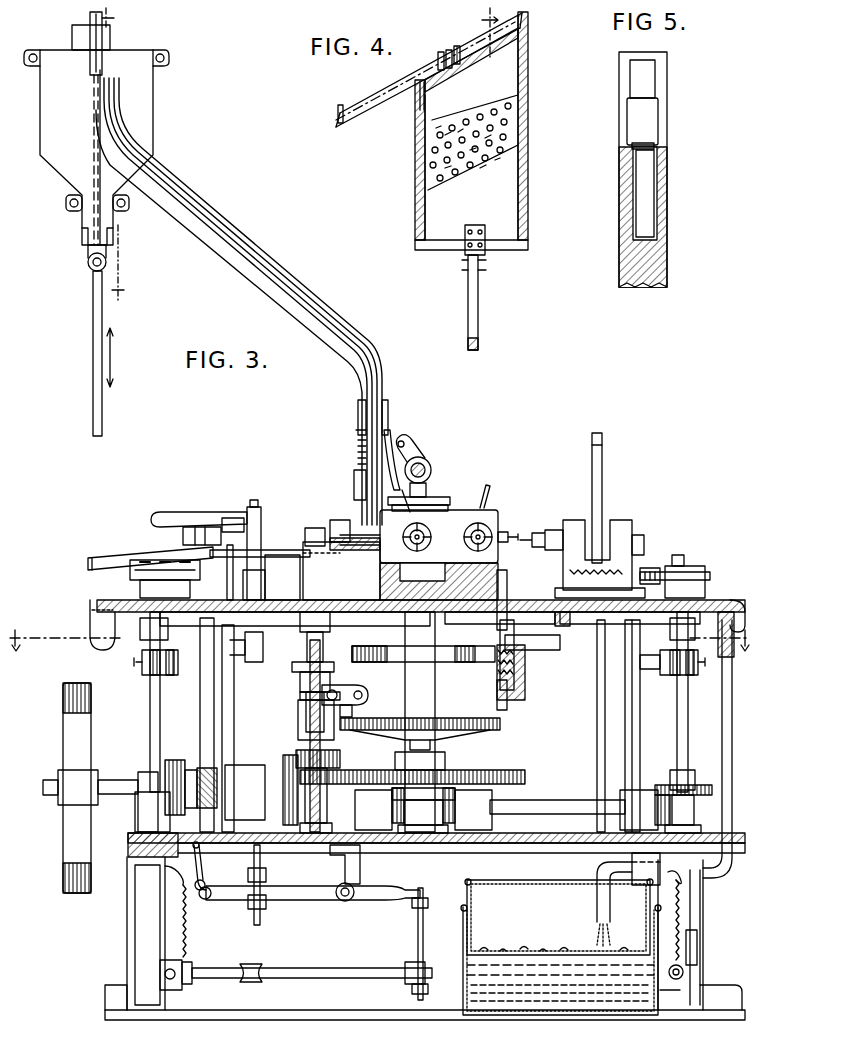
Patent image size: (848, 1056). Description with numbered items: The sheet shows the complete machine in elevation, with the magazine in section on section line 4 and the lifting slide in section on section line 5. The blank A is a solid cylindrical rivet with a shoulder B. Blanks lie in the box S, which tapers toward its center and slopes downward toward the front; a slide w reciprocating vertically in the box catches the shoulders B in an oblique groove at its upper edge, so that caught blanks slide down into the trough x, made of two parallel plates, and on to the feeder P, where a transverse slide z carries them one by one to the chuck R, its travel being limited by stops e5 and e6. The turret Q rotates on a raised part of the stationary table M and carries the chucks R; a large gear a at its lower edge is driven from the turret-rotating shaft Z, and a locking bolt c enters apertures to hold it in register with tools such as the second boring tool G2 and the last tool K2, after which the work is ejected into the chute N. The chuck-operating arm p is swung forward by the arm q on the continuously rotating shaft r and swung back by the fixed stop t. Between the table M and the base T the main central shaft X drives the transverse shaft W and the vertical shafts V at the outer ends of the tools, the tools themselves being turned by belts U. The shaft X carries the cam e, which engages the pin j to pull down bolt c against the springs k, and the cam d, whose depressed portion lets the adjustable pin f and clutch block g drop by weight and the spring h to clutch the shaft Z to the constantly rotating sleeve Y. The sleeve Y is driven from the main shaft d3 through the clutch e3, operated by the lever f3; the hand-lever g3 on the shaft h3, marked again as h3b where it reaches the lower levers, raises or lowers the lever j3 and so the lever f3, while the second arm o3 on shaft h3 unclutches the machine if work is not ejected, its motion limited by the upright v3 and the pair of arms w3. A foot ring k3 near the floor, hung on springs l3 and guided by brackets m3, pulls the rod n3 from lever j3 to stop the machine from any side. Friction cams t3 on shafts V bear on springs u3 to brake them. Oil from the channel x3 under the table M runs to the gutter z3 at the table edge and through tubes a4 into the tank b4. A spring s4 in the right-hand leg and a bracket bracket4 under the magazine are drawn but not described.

In FIG. 3, the magazine box S is at (96, 128).
In FIG. 4, the magazine box S is at (530, 94).
In FIG. 3, the slide w is at (90, 24).
In FIG. 4, the slide w is at (473, 138).
In FIG. 5, the slide w is at (662, 275).
In FIG. 3, the trough x is at (140, 158).
In FIG. 4, the trough x is at (338, 125).
In FIG. 3, the section line 4 is at (114, 161).
In FIG. 4, the section line 5 is at (482, 34).
In FIG. 3, the stop t is at (358, 492).
In FIG. 3, the transverse slide z is at (352, 536).
In FIG. 3, the second arm o3 is at (310, 528).
In FIG. 3, the arm q is at (412, 455).
In FIG. 3, the shaft r is at (431, 478).
In FIG. 3, the chuck-operating arm p is at (478, 505).
In FIG. 3, the turret Q is at (449, 536).
In FIG. 3, the chuck R is at (439, 569).
In FIG. 3, the feeder P is at (341, 560).
In FIG. 3, the ejecting chute N is at (110, 558).
In FIG. 3, the last tool mechanism K2 is at (183, 540).
In FIG. 3, the hand-lever g3 is at (190, 512).
In FIG. 3, the stop e6 is at (236, 518).
In FIG. 3, the shaft h3 is at (256, 505).
In FIG. 3, the stop e5 is at (260, 560).
In FIG. 3, the belt U is at (602, 462).
In FIG. 3, the second boring tool G2 is at (582, 547).
In FIG. 3, the table M is at (684, 576).
In FIG. 3, the gutter z3 is at (742, 598).
In FIG. 3, the large gear a is at (388, 625).
In FIG. 3, the locking bolt c is at (472, 612).
In FIG. 3, the main central shaft X is at (445, 760).
In FIG. 3, the cam d is at (465, 718).
In FIG. 3, the cam e is at (468, 646).
In FIG. 3, the transverse shaft W is at (538, 830).
In FIG. 3, the base T is at (550, 833).
In FIG. 3, the pin j is at (503, 645).
In FIG. 3, the spring k is at (525, 660).
In FIG. 3, the oil channel x3 is at (585, 618).
In FIG. 3, the turret-rotating shaft Z is at (307, 650).
In FIG. 3, the pair of arms w3 is at (282, 655).
In FIG. 3, the clutch block g is at (300, 690).
In FIG. 3, the spring h is at (298, 720).
In FIG. 3, the adjustable pin f is at (368, 692).
In FIG. 3, the sleeve Y is at (296, 755).
In FIG. 3, the upright v3 is at (420, 725).
In FIG. 3, the vertical shaft V is at (150, 706).
In FIG. 3, the spring u3 is at (665, 675).
In FIG. 3, the friction cam t3 is at (672, 676).
In FIG. 3, the tube a4 is at (730, 740).
In FIG. 3, the main shaft d3 is at (108, 780).
In FIG. 3, the clutch e3 is at (186, 770).
In FIG. 3, the lever f3 is at (202, 865).
In FIG. 3, the rod h3b is at (262, 868).
In FIG. 3, the lever j3 is at (288, 897).
In FIG. 3, the spring l3 is at (186, 940).
In FIG. 3, the bracket m3 is at (185, 960).
In FIG. 3, the ring k3 is at (300, 975).
In FIG. 3, the rod n3 is at (415, 940).
In FIG. 3, the tank b4 is at (462, 955).
In FIG. 3, the spring s4 is at (678, 930).
In FIG. 4, the bracket bracket4 is at (474, 287).
In FIG. 5, the blank A is at (648, 175).
In FIG. 5, the shoulder B is at (654, 140).